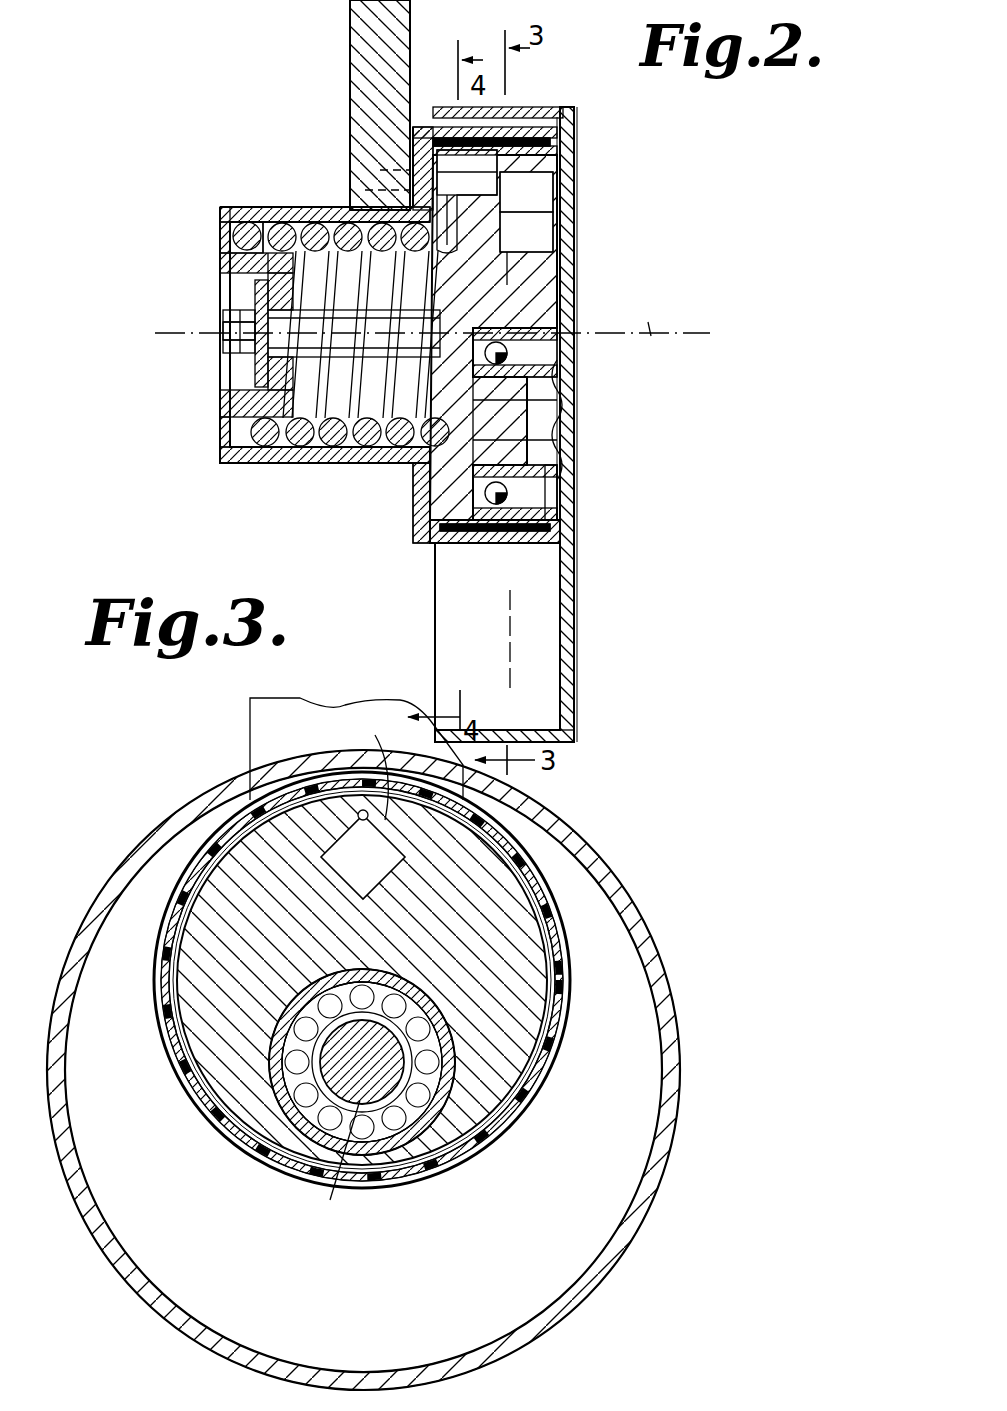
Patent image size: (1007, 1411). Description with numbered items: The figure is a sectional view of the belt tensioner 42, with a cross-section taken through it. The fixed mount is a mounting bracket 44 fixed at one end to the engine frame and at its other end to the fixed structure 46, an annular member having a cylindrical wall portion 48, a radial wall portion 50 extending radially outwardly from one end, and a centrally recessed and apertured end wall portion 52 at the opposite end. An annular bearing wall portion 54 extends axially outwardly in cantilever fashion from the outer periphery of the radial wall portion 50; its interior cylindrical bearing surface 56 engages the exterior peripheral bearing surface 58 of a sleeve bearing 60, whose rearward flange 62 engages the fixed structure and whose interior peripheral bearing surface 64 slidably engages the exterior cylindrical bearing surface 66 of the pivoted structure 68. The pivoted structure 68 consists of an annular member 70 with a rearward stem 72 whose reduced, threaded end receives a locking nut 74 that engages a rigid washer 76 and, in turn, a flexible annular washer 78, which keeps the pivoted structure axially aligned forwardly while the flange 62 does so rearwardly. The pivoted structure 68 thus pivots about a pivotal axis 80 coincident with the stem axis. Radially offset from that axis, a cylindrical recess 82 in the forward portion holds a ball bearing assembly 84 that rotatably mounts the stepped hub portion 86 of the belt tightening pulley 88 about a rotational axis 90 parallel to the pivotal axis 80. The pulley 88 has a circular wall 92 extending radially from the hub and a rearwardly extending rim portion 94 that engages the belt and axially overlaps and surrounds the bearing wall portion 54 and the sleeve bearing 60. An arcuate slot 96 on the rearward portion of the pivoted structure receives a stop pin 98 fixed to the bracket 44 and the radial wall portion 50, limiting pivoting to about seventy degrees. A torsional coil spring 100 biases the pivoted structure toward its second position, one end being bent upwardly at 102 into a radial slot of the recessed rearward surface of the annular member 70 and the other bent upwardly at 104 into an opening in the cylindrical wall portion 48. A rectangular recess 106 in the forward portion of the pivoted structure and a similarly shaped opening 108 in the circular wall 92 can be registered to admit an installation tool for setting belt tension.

In FIG. 2, the belt tensioner 42 is at (592, 183).
In FIG. 3, the belt tensioner 42 is at (600, 860).
In FIG. 2, the mounting bracket 44 is at (352, 70).
In FIG. 3, the mounting bracket 44 is at (252, 728).
In FIG. 2, the fixed structure 46 is at (345, 468).
In FIG. 3, the fixed structure 46 is at (578, 940).
In FIG. 2, the cylindrical wall portion 48 is at (326, 210).
In FIG. 2, the radial wall portion 50 is at (414, 515).
In FIG. 2, the end wall portion 52 is at (225, 412).
In FIG. 2, the annular bearing wall portion 54 is at (540, 110).
In FIG. 3, the annular bearing wall portion 54 is at (500, 1150).
In FIG. 2, the interior cylindrical bearing surface 56 is at (572, 152).
In FIG. 3, the interior cylindrical bearing surface 56 is at (300, 1150).
In FIG. 2, the exterior peripheral bearing surface 58 is at (445, 545).
In FIG. 3, the exterior peripheral bearing surface 58 is at (175, 1086).
In FIG. 2, the sleeve bearing 60 is at (560, 530).
In FIG. 3, the sleeve bearing 60 is at (545, 1052).
In FIG. 2, the flange 62 is at (432, 150).
In FIG. 2, the interior peripheral bearing surface 64 is at (560, 500).
In FIG. 2, the exterior cylindrical bearing surface 66 is at (460, 125).
In FIG. 3, the exterior cylindrical bearing surface 66 is at (425, 1170).
In FIG. 2, the pivoted structure 68 is at (565, 288).
In FIG. 3, the pivoted structure 68 is at (165, 1040).
In FIG. 2, the annular member 70 is at (520, 385).
In FIG. 3, the annular member 70 is at (185, 966).
In FIG. 2, the stem 72 is at (432, 333).
In FIG. 2, the locking nut 74 is at (240, 322).
In FIG. 2, the rigid washer 76 is at (252, 364).
In FIG. 2, the annular washer 78 is at (262, 378).
In FIG. 2, the pivotal axis 80 is at (668, 342).
In FIG. 3, the pivotal axis 80 is at (363, 854).
In FIG. 2, the cylindrical recess 82 is at (540, 330).
In FIG. 3, the cylindrical recess 82 is at (296, 1090).
In FIG. 2, the ball bearing assembly 84 is at (565, 476).
In FIG. 3, the ball bearing assembly 84 is at (440, 1142).
In FIG. 2, the stepped hub portion 86 is at (515, 410).
In FIG. 3, the stepped hub portion 86 is at (400, 1085).
In FIG. 2, the belt tightening pulley 88 is at (578, 613).
In FIG. 3, the belt tightening pulley 88 is at (686, 1086).
In FIG. 2, the rotational axis 90 is at (655, 425).
In FIG. 3, the rotational axis 90 is at (340, 1165).
In FIG. 2, the circular wall 92 is at (578, 680).
In FIG. 2, the rim portion 94 is at (540, 735).
In FIG. 3, the rim portion 94 is at (135, 850).
In FIG. 2, the arcuate slot 96 is at (526, 192).
In FIG. 2, the stop pin 98 is at (340, 156).
In FIG. 2, the torsional coil spring 100 is at (270, 466).
In FIG. 2, the bent end of torsional spring 102 is at (553, 215).
In FIG. 2, the bent end of torsional spring 104 is at (250, 222).
In FIG. 2, the rectangular recess 106 is at (455, 205).
In FIG. 3, the rectangular recess 106 is at (351, 768).
In FIG. 2, the opening 108 is at (548, 262).